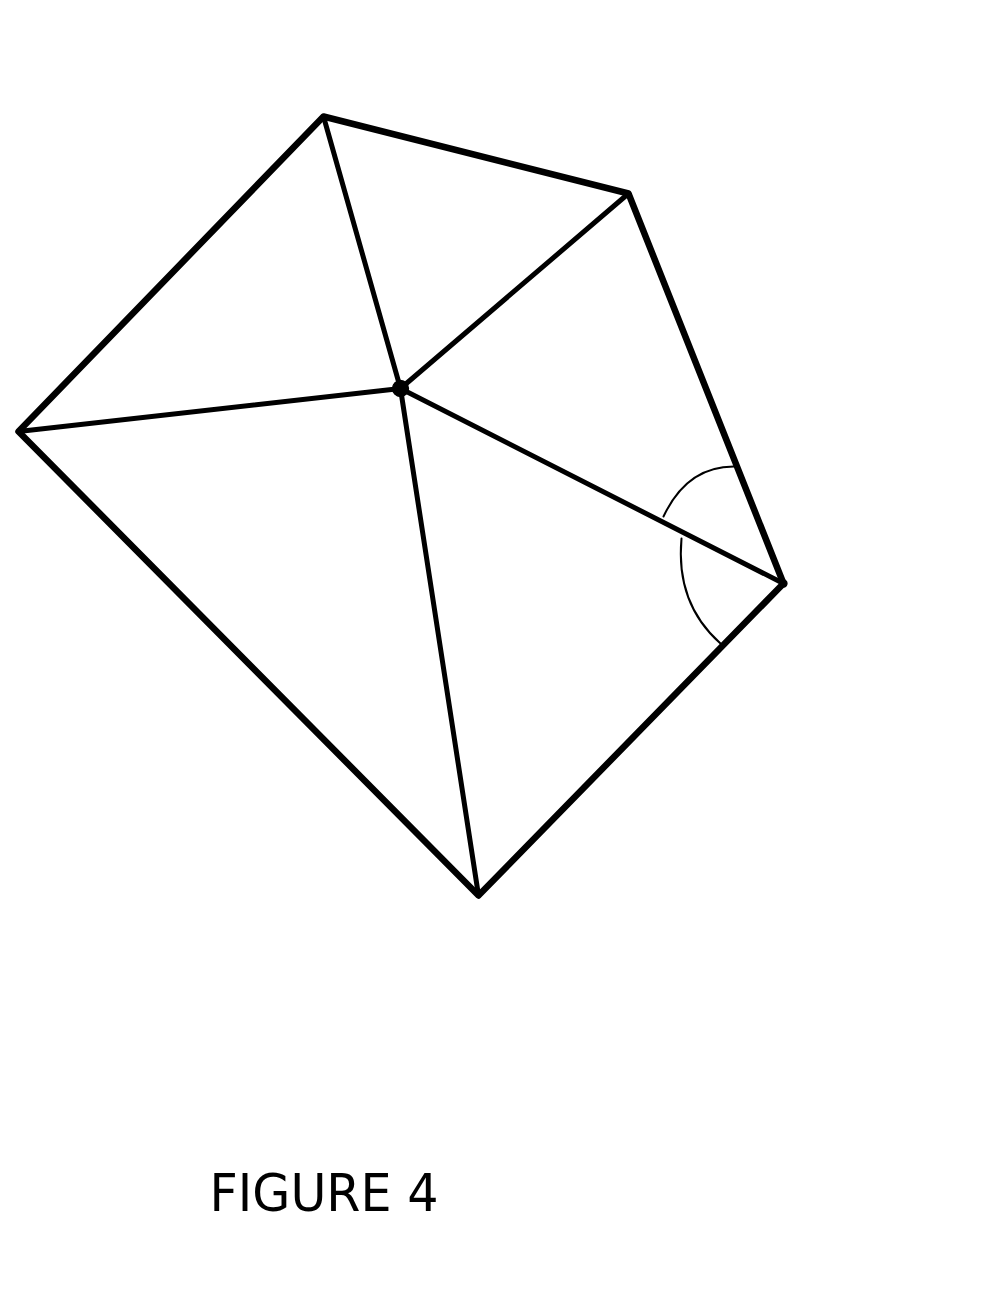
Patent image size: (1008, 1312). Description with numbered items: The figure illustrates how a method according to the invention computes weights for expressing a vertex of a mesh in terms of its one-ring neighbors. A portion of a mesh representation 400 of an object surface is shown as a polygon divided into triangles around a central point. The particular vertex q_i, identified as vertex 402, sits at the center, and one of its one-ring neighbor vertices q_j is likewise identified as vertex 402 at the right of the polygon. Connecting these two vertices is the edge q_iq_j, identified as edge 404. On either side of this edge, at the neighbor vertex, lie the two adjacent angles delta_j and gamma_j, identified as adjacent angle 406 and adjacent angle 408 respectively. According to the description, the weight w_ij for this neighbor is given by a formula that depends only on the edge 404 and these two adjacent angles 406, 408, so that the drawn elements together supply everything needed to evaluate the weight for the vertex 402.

The mesh representation 400 is at (441, 502).
The vertex 402 is at (395, 382).
The edge 404 is at (535, 412).
The adjacent angle delta_j 406 is at (640, 474).
The adjacent angle gamma_j 408 is at (657, 629).